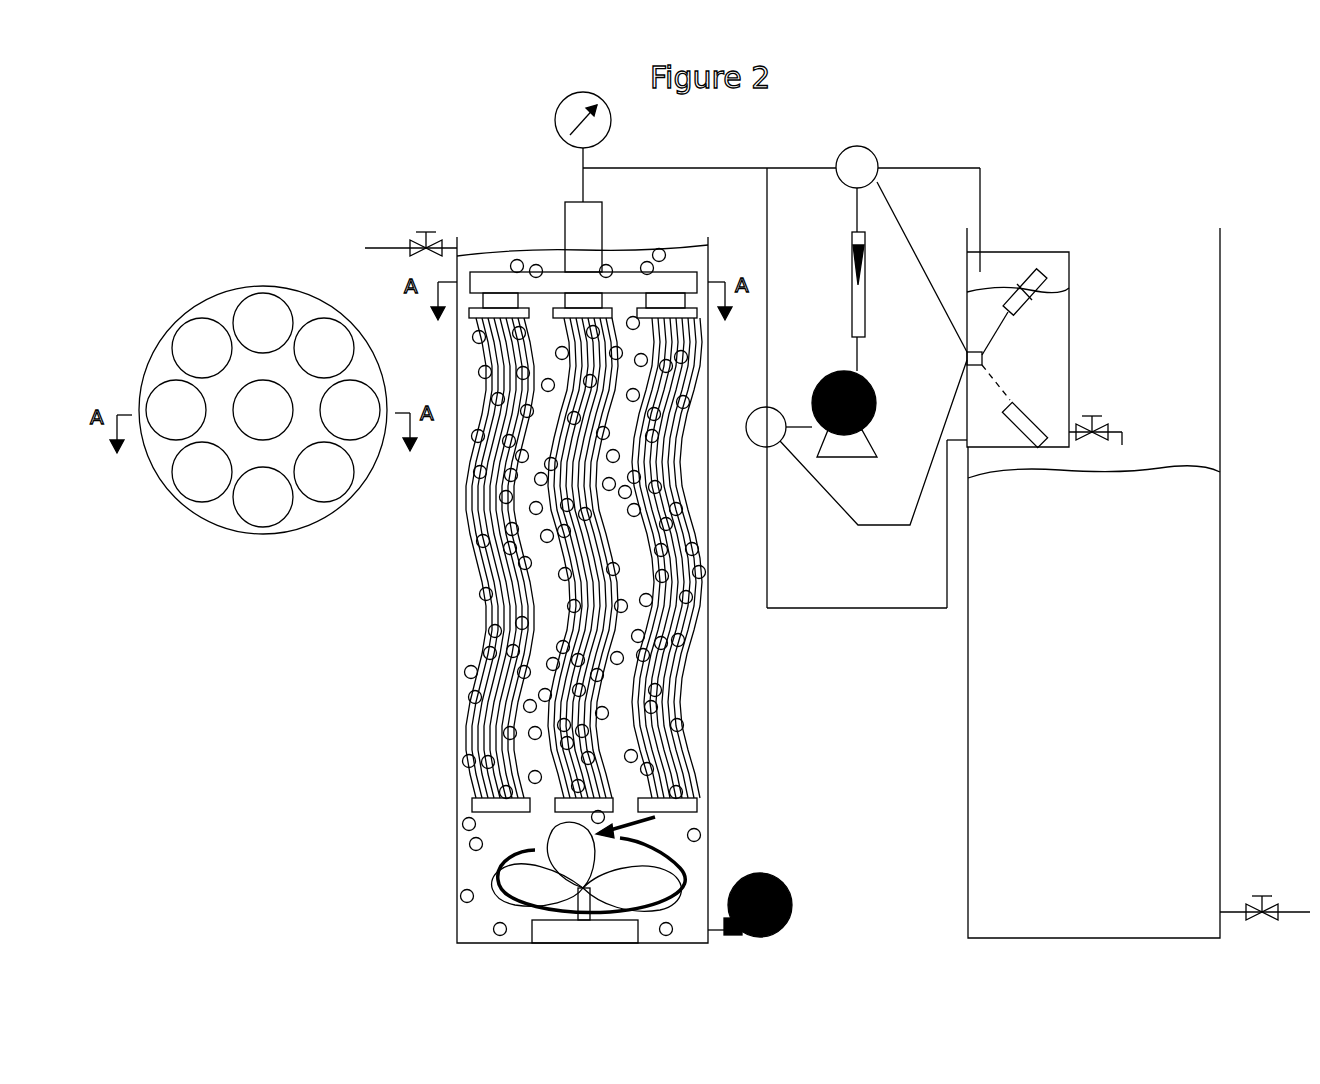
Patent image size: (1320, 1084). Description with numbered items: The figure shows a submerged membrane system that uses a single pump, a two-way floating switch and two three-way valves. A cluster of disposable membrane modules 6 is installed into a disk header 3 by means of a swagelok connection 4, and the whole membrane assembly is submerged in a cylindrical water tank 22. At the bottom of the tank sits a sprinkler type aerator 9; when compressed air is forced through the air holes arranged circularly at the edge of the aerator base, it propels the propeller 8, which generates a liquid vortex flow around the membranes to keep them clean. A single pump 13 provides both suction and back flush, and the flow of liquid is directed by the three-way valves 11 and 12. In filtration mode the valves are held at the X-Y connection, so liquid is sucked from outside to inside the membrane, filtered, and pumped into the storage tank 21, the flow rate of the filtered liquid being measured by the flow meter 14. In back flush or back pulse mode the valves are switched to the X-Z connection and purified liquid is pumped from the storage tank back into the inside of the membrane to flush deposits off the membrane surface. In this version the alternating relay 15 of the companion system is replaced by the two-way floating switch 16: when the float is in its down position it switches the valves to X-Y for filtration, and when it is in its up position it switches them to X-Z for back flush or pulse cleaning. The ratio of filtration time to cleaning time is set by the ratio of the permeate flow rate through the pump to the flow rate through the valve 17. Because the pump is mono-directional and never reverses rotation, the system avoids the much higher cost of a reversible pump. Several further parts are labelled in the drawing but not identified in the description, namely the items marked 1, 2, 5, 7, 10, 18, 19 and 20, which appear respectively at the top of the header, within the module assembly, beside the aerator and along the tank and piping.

The pressure gauge 1 is at (570, 147).
The permeate outlet header 2 is at (583, 237).
The disk header 3 is at (583, 283).
The swagelok connection 4 is at (584, 299).
The membrane module potting plates 5 is at (421, 410).
The disposable membrane modules 6 is at (584, 558).
The bottom potting plates 7 is at (584, 812).
The propeller 8 is at (589, 865).
The sprinkler type aerator 9 is at (585, 915).
The impeller motor 10 is at (770, 905).
The three-way valve 11 is at (762, 432).
The three-way valve 12 is at (855, 163).
The pump 13 is at (865, 414).
The flow meter 14 is at (876, 284).
The alternating relay 15 is at (960, 359).
The two-way floating switch 16 is at (1018, 338).
The valve 17 is at (1095, 415).
The drain valve 18 is at (1265, 894).
The feed valve 19 is at (411, 225).
The air bubbles 20 is at (470, 693).
The storage tank 21 is at (1094, 583).
The cylindrical water tank 22 is at (457, 548).